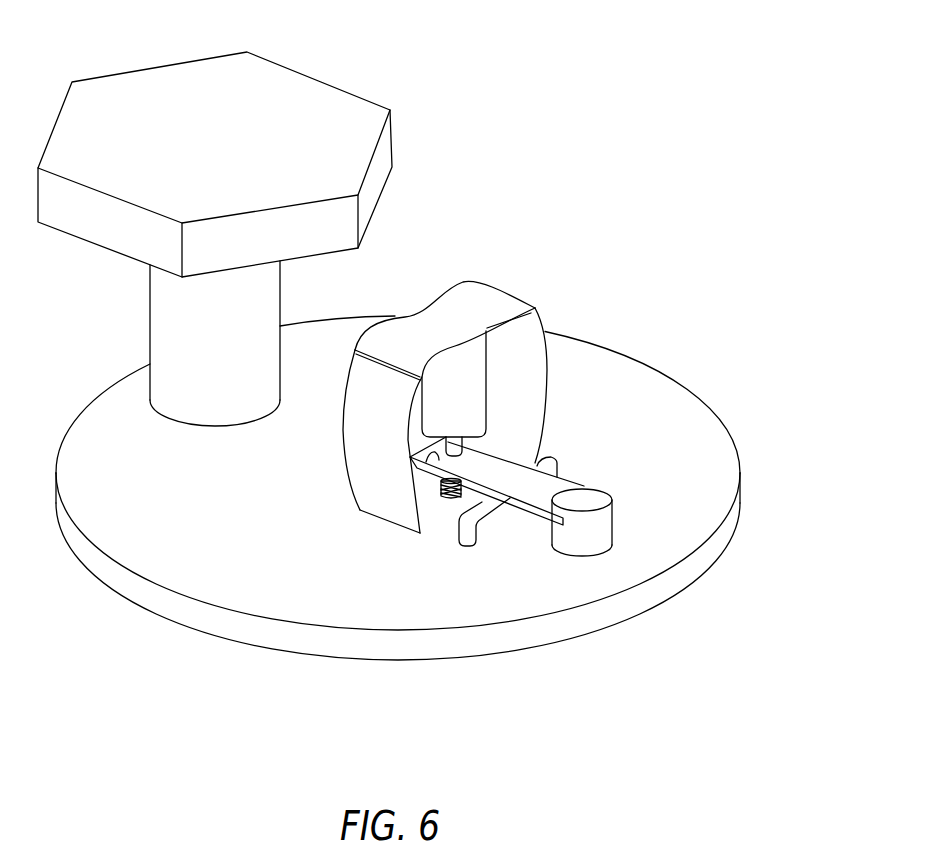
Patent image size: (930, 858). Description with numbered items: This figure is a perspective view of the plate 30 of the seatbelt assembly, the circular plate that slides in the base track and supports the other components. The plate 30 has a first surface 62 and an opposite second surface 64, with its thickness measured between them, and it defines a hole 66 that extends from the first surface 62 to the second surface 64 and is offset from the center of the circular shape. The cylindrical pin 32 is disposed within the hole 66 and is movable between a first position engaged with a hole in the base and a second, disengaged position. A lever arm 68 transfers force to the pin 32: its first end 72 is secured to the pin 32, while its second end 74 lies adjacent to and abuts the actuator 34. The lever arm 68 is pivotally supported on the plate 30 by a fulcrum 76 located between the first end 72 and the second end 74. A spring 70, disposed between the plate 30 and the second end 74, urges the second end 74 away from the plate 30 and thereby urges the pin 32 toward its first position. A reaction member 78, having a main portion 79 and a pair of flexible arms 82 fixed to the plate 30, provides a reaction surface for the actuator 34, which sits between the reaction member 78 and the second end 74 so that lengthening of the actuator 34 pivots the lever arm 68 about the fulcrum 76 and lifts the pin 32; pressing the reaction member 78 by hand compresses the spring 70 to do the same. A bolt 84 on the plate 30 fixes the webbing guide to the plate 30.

The plate 30 is at (370, 488).
The pin 32 is at (644, 583).
The actuator 34 is at (470, 407).
The first surface 62 is at (86, 490).
The second surface 64 is at (110, 588).
The hole 66 is at (580, 557).
The lever arm 68 is at (512, 509).
The spring 70 is at (452, 500).
The first end 72 is at (547, 477).
The second end 74 is at (400, 510).
The fulcrum 76 is at (468, 533).
The reaction member 78 is at (449, 396).
The main portion 79 is at (420, 327).
The arms 82 is at (360, 438).
The bolt 84 is at (167, 82).